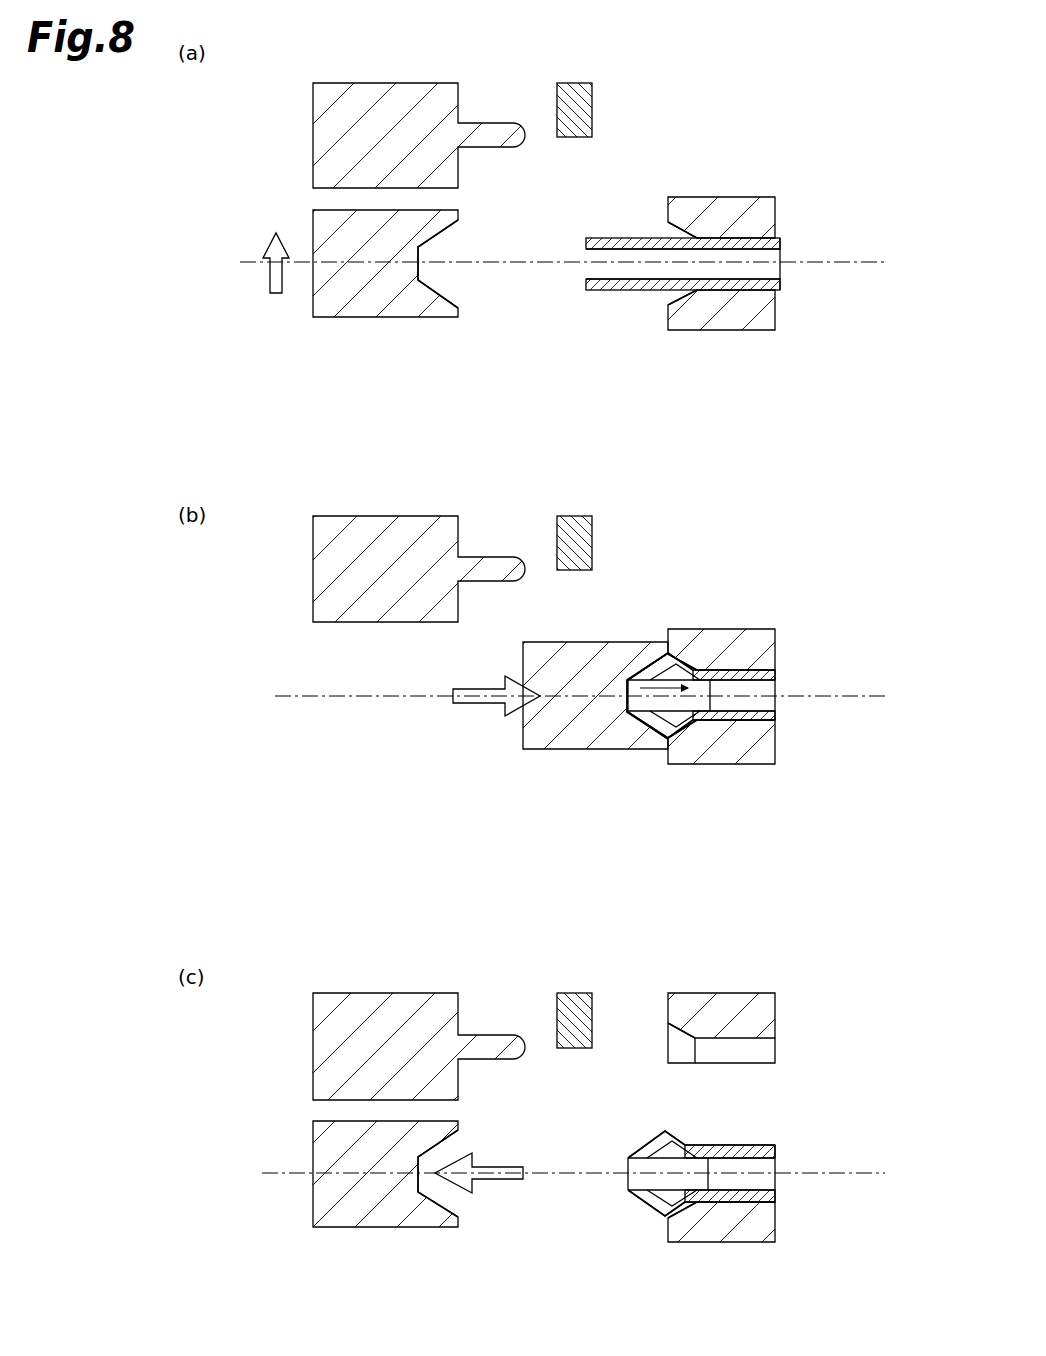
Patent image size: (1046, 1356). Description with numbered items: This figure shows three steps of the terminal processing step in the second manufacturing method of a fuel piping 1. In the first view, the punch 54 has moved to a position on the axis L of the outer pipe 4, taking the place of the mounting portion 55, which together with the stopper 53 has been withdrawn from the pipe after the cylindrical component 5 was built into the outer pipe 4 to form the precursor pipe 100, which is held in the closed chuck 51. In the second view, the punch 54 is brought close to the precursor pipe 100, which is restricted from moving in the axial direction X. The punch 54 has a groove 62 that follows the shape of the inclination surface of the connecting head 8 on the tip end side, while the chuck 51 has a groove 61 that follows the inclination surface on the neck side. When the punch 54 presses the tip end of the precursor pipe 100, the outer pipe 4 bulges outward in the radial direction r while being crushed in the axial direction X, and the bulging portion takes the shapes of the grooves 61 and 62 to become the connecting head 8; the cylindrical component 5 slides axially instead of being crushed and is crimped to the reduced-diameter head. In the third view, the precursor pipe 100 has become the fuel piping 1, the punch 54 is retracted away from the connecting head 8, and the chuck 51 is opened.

The fuel piping 1 is at (781, 665).
The outer pipe 4 is at (620, 238).
The cylindrical component 5 is at (617, 272).
The connecting head 8 is at (643, 661).
The chuck 51 is at (695, 197).
The stopper 53 is at (594, 110).
The punch 54 is at (368, 317).
The mounting portion 55 is at (373, 83).
The groove 61 is at (668, 292).
The groove 62 is at (458, 285).
The precursor pipe 100 is at (786, 234).
The axis L is at (860, 262).
The axial direction X is at (627, 706).
The radial direction r is at (651, 724).